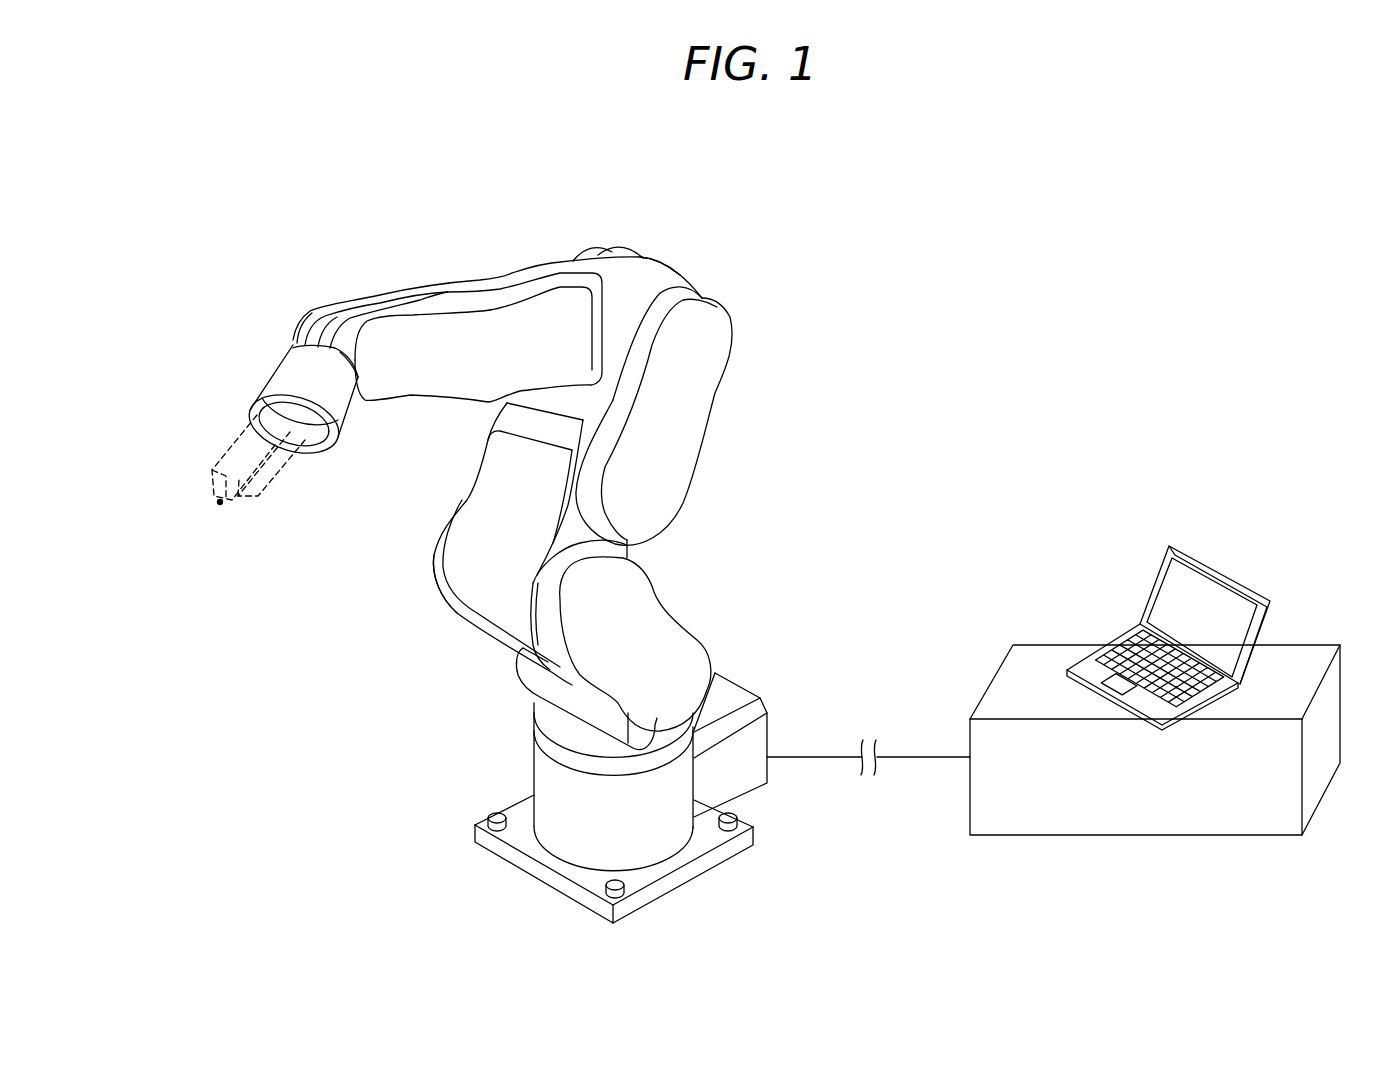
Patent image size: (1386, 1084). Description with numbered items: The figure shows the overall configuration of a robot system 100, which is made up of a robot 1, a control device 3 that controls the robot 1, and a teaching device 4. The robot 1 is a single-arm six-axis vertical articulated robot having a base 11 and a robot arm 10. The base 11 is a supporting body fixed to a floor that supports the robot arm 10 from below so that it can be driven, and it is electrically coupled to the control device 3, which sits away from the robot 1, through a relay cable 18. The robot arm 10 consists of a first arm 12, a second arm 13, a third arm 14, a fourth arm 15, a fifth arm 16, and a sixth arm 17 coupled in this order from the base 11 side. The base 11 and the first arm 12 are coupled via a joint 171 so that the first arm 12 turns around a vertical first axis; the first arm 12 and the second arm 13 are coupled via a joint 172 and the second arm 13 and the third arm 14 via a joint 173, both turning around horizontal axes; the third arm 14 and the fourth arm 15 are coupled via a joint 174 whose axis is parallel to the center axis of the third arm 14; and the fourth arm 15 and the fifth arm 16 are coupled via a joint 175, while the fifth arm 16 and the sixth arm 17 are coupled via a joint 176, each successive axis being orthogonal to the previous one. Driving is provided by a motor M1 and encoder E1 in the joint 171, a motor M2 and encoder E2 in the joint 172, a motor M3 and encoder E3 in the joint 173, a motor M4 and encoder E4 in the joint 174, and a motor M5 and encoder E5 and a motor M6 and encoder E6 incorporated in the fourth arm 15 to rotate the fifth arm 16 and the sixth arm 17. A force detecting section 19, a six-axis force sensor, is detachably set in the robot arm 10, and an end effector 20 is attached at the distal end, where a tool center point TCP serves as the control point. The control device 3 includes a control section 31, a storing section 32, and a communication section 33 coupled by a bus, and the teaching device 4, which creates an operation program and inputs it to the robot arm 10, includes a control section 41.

The robot system 100 is at (1205, 230).
The robot 1 is at (811, 234).
The robot arm 10 is at (740, 306).
The base 11 is at (613, 842).
The first arm 12 is at (697, 667).
The second arm 13 is at (672, 480).
The third arm 14 is at (653, 258).
The fourth arm 15 is at (505, 310).
The fifth arm 16 is at (330, 326).
The sixth arm 17 is at (293, 372).
The relay cable 18 is at (928, 760).
The force detecting section 19 is at (323, 437).
The end effector 20 is at (277, 480).
The joint 171 is at (567, 710).
The joint 172 is at (432, 558).
The joint 173 is at (608, 282).
The joint 174 is at (568, 258).
The joint 175 is at (343, 297).
The joint 176 is at (364, 382).
The tool center point TCP is at (218, 505).
The motor M1 is at (658, 798).
The encoder E1 is at (657, 803).
The motor M2 is at (678, 635).
The encoder E2 is at (643, 640).
The motor M3 is at (629, 486).
The encoder E3 is at (637, 513).
The motor M4 is at (603, 329).
The encoder E4 is at (620, 317).
The motor M5 is at (402, 252).
The encoder E5 is at (402, 252).
The motor M6 is at (402, 252).
The encoder E6 is at (483, 343).
The control device 3 is at (1300, 638).
The control section 31 is at (1035, 797).
The storing section 32 is at (1106, 797).
The communication section 33 is at (1178, 797).
The teaching device 4 is at (1226, 560).
The control section 41 is at (1183, 603).